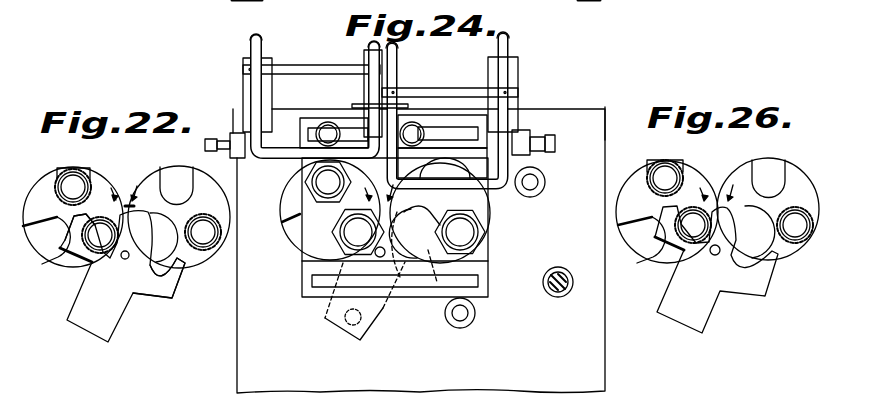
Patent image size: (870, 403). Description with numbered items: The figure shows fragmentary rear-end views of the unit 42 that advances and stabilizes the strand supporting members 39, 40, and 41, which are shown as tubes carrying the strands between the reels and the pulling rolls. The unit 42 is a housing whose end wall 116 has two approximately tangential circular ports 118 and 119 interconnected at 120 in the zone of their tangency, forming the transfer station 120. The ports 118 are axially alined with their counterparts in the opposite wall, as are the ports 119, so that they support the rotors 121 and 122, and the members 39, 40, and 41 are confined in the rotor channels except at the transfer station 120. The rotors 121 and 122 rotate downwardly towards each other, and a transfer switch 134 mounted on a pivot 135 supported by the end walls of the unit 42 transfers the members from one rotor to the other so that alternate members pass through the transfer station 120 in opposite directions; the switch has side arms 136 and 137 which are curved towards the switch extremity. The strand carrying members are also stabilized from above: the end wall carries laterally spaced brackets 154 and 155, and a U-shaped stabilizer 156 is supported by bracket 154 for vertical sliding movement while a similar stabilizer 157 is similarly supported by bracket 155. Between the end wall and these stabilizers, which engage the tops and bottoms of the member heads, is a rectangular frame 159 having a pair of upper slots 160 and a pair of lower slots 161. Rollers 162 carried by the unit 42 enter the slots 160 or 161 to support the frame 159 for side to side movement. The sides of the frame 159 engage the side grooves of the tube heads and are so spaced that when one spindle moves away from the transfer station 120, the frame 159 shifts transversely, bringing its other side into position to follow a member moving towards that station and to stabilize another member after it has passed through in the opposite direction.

In FIG. 22, the supporting member 39 is at (213, 243).
In FIG. 24, the supporting member 39 is at (340, 243).
In FIG. 26, the supporting member 39 is at (678, 167).
In FIG. 22, the supporting member 40 is at (78, 171).
In FIG. 24, the supporting member 40 is at (480, 232).
In FIG. 26, the supporting member 40 is at (684, 250).
In FIG. 22, the supporting member 41 is at (110, 250).
In FIG. 24, the supporting member 41 is at (312, 190).
In FIG. 26, the supporting member 41 is at (805, 240).
In FIG. 24, the unit 42 is at (586, 105).
In FIG. 24, the end wall 116 is at (600, 140).
In FIG. 22, the circular port 118 is at (40, 195).
In FIG. 26, the circular port 118 is at (640, 187).
In FIG. 22, the circular port 119 is at (175, 177).
In FIG. 24, the circular port 119 is at (436, 172).
In FIG. 26, the circular port 119 is at (770, 168).
In FIG. 22, the transfer station 120 is at (132, 190).
In FIG. 22, the rotor 121 is at (67, 254).
In FIG. 22, the rotor 122 is at (196, 257).
In FIG. 22, the transfer switch 134 is at (133, 291).
In FIG. 24, the transfer switch 134 is at (372, 303).
In FIG. 26, the transfer switch 134 is at (694, 266).
In FIG. 26, the pivot 135 is at (717, 256).
In FIG. 22, the side arm 136 is at (78, 248).
In FIG. 22, the side arm 137 is at (172, 282).
In FIG. 24, the bracket 154 is at (243, 102).
In FIG. 24, the bracket 155 is at (518, 73).
In FIG. 24, the U-shaped stabilizer 156 is at (270, 160).
In FIG. 24, the stabilizer 157 is at (515, 172).
In FIG. 24, the rectangular frame 159 is at (487, 250).
In FIG. 24, the upper slot 160 is at (443, 137).
In FIG. 24, the lower slot 161 is at (325, 283).
In FIG. 24, the roller 162 is at (329, 122).